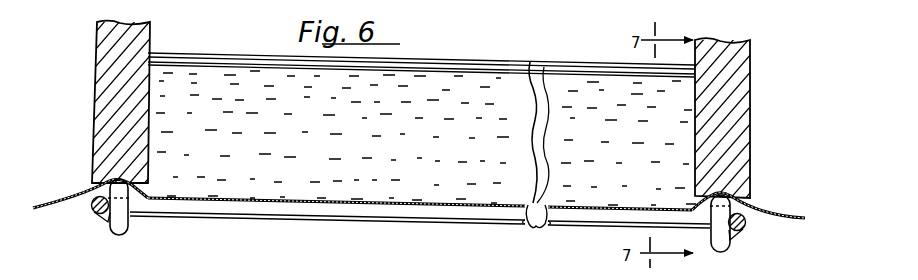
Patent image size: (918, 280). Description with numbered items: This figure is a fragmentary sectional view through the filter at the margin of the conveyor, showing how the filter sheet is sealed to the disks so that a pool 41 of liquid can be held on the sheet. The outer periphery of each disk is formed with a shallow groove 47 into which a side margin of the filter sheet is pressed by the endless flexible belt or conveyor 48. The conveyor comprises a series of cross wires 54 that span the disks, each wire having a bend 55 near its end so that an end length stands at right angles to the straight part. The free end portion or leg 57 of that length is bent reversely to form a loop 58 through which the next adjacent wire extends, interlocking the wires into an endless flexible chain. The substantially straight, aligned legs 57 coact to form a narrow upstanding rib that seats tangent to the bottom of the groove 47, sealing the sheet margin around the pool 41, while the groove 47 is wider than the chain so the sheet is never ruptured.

The pool 41 is at (546, 72).
The groove 47 is at (148, 187).
The endless flexible belt or conveyor 48 is at (262, 218).
The cross wire 54 is at (550, 228).
The bend 55 is at (94, 211).
The free end portion (leg) 57 is at (100, 184).
The loop 58 is at (127, 233).